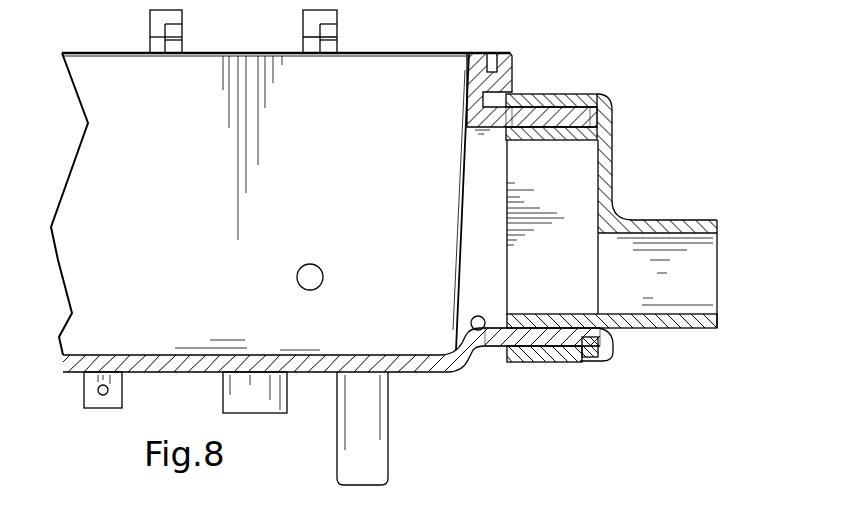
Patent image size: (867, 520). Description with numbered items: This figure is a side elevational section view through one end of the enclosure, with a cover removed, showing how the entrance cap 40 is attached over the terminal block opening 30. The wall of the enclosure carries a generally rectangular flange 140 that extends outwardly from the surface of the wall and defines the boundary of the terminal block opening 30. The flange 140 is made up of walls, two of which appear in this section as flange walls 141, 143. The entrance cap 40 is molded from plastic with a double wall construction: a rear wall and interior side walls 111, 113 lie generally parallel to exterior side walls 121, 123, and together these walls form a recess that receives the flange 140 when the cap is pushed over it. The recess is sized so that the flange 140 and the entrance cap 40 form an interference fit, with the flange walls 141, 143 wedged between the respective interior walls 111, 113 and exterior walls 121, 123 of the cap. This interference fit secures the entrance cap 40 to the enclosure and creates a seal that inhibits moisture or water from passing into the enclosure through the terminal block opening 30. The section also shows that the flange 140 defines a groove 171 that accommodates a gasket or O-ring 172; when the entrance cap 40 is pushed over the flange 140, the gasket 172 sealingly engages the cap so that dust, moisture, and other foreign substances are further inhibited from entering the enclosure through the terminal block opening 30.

The terminal block opening 30 is at (483, 332).
The entrance cap 40 is at (607, 137).
The interior side wall 111 is at (630, 329).
The interior side wall 113 is at (523, 128).
The exterior side wall 121 is at (590, 353).
The exterior side wall 123 is at (575, 100).
The flange 140 is at (568, 116).
The flange wall 141 is at (558, 340).
The flange wall 143 is at (547, 115).
The groove 171 is at (574, 343).
The gasket 172 is at (612, 340).